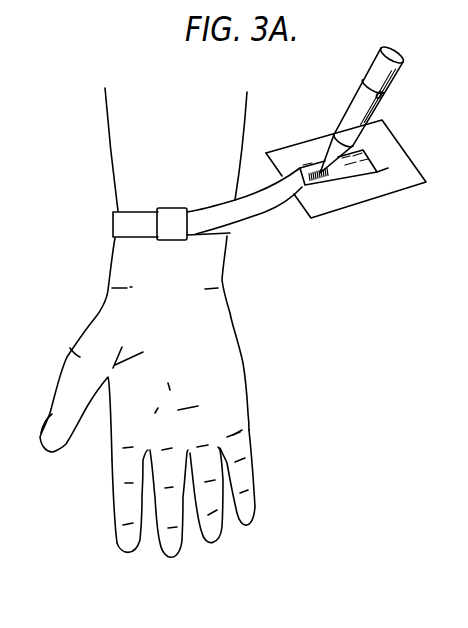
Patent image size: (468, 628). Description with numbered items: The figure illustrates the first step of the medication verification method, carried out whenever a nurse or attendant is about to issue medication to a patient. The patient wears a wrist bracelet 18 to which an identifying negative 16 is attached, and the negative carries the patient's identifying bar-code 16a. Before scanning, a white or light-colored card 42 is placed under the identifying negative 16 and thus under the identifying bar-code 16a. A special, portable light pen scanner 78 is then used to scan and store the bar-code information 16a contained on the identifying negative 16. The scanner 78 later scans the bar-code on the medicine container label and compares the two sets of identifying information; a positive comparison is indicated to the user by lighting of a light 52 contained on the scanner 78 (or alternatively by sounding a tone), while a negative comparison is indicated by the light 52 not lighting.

The identifying negative 16 is at (371, 172).
The identifying bar-code 16a is at (324, 178).
The wrist bracelet 18 is at (238, 222).
The card 42 is at (401, 167).
The light 52 is at (362, 82).
The portable light pen scanner 78 is at (398, 82).